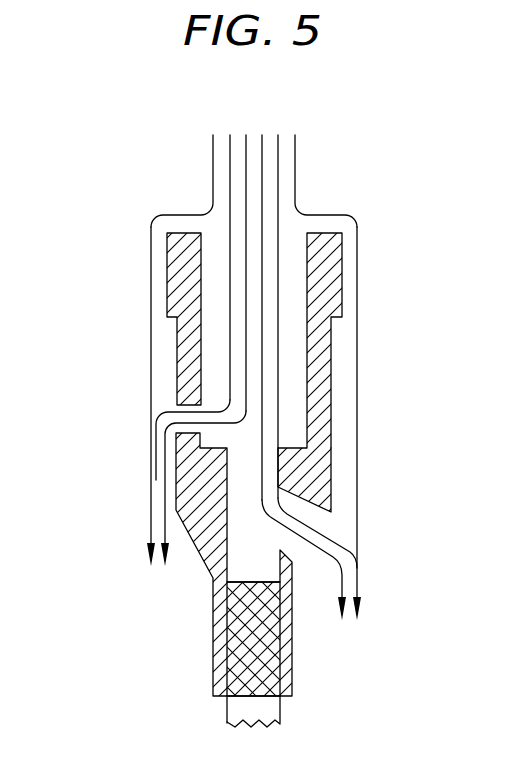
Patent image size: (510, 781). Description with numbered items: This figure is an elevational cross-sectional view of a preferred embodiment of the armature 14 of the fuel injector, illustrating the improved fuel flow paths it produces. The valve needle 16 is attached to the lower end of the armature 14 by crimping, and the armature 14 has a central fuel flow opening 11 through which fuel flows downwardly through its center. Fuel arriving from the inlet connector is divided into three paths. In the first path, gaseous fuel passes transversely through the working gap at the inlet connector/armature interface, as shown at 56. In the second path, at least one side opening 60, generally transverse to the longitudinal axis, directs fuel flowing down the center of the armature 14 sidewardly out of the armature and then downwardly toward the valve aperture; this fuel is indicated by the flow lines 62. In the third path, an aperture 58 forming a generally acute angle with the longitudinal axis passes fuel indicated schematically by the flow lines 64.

The central fuel flow opening 11 is at (293, 287).
The armature 14 is at (320, 328).
The valve needle 16 is at (270, 707).
The fuel flow through working gap 56 is at (212, 168).
The aperture 58 is at (303, 510).
The side opening 60 is at (186, 412).
The flow lines 62 is at (356, 427).
The flow lines 64 is at (333, 562).